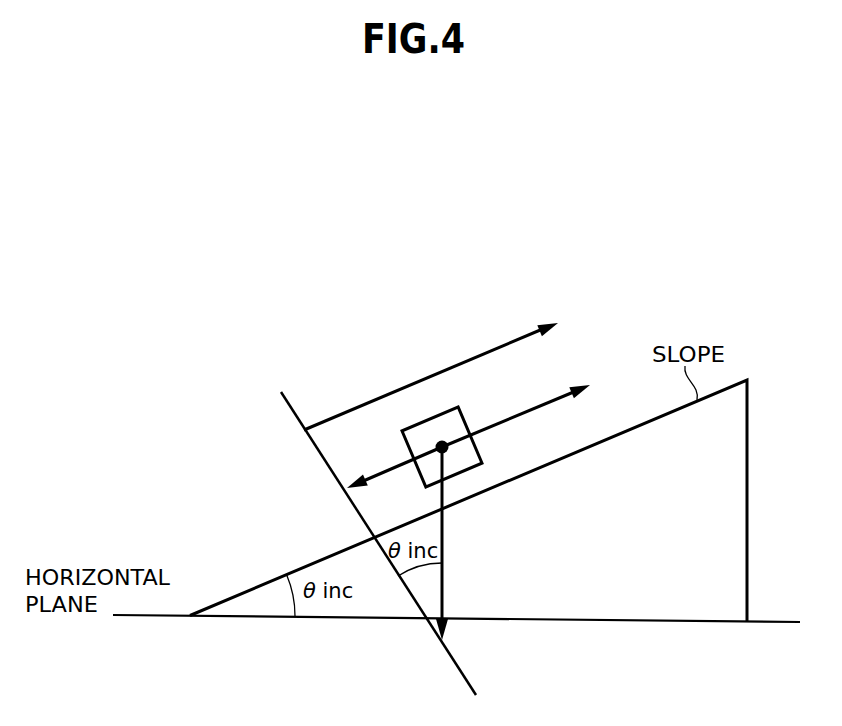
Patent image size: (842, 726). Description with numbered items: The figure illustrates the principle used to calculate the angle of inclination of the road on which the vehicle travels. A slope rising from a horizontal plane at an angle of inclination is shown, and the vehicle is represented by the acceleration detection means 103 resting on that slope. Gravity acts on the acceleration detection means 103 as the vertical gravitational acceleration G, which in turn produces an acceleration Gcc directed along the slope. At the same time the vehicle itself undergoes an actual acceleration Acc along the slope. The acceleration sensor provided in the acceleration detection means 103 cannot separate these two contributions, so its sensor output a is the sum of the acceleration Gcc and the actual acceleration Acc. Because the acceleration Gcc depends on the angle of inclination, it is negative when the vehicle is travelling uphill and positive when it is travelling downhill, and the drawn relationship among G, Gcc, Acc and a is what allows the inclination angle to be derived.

The acceleration detection means 103 is at (468, 467).
The sensor output a is at (447, 368).
The actual acceleration of the vehicle Acc is at (525, 411).
The acceleration produced by the gravitational acceleration Gcc is at (395, 467).
The gravitational acceleration G is at (447, 579).